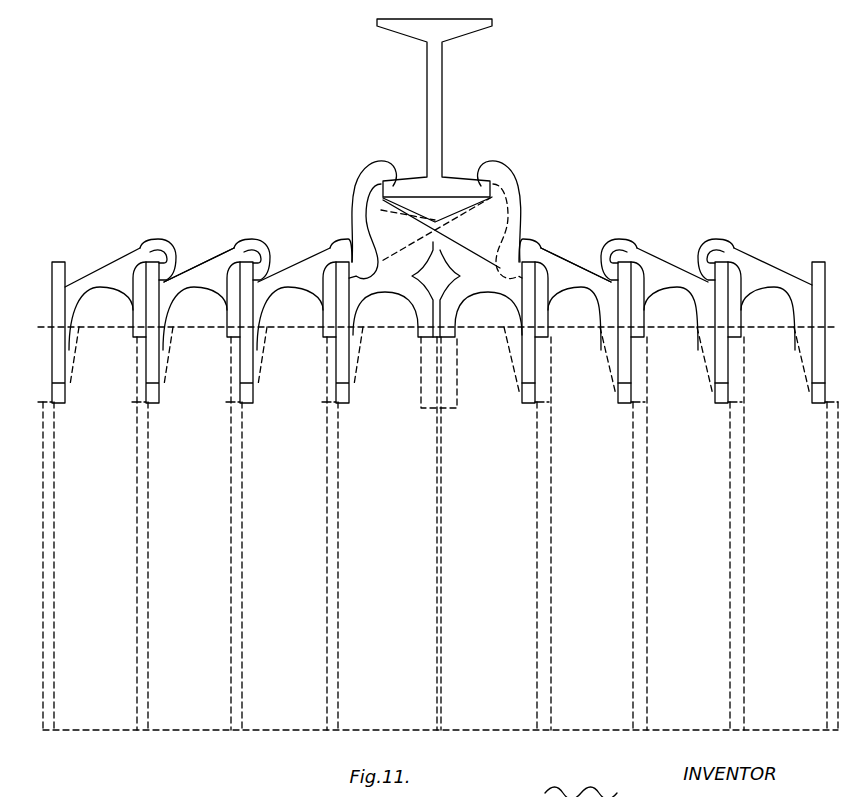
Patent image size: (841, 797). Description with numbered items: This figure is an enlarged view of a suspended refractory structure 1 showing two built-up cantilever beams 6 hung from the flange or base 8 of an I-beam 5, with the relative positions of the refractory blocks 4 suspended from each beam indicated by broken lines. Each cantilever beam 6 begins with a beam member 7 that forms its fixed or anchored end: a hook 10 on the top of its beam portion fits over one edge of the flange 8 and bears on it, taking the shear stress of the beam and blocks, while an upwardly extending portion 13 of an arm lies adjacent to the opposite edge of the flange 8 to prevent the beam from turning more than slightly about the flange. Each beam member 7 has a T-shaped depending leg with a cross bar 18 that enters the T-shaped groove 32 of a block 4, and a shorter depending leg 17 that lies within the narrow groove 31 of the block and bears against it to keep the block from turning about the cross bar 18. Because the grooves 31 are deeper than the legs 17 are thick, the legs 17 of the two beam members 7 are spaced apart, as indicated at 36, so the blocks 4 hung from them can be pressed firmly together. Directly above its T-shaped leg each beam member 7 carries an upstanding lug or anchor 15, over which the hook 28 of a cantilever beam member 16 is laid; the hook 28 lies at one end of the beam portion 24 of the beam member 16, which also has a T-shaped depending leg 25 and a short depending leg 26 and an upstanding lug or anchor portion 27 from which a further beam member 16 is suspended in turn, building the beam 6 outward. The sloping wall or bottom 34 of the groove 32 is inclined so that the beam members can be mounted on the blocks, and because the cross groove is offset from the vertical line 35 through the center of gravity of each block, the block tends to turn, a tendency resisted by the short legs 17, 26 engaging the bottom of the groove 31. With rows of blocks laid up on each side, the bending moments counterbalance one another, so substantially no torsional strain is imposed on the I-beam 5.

The I-beam 5 is at (427, 72).
The flange or base of the I-beam 8 is at (455, 181).
The upwardly extending portion of the arm or finger 13 is at (376, 182).
The hook 10 is at (353, 200).
The suspended refractory structure 1 is at (259, 212).
The cantilever beam member 16 is at (93, 271).
The built-up cantilever beam 6 is at (171, 249).
The hook of the cantilever beam member 28 is at (262, 252).
The upstanding lug or anchor portion 27 is at (622, 258).
The upstanding lug or anchor 15 is at (549, 239).
The beam member 7 is at (385, 290).
The spacing between legs 36 is at (436, 289).
The depending leg 17 is at (414, 313).
The beam portion 24 is at (90, 290).
The depending leg 26 is at (322, 311).
The depending leg 25 is at (615, 366).
The sloping wall or bottom 34 is at (702, 345).
The groove 31 is at (132, 380).
The T-shaped groove 32 is at (166, 364).
The cross bar 18 is at (521, 401).
The vertical line through the center of gravity 35 is at (181, 732).
The refractory block 4 is at (260, 726).